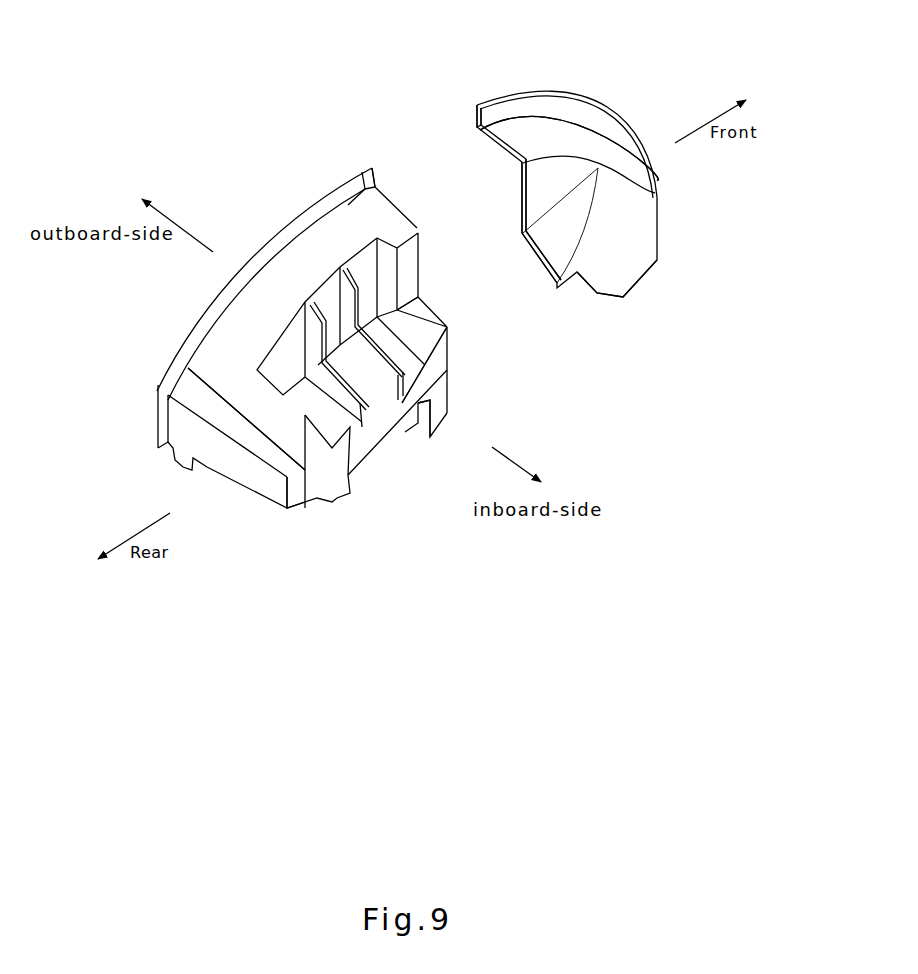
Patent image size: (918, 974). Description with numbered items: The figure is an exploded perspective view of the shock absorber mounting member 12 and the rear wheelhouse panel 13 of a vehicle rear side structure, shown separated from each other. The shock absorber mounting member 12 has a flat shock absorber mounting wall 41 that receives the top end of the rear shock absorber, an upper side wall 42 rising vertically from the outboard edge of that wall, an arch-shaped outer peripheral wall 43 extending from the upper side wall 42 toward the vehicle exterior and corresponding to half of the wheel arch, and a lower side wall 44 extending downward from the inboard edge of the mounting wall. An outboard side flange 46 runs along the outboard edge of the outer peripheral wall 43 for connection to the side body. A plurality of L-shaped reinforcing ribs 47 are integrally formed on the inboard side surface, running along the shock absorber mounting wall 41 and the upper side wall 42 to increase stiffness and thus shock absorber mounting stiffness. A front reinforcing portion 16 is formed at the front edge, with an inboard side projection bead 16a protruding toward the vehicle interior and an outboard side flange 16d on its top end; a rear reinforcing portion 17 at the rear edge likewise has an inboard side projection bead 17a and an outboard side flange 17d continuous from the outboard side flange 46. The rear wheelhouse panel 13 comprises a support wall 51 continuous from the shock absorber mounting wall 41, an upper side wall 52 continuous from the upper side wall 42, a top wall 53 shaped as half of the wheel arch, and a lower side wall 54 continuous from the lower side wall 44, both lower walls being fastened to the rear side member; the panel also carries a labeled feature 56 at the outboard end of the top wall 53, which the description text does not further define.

The shock absorber mounting member 12 is at (251, 228).
The rear wheelhouse panel 13 is at (619, 103).
The front reinforcing portion 16 is at (414, 211).
The inboard side projection bead 16a is at (410, 287).
The outboard side flange 16d is at (372, 187).
The rear reinforcing portion 17 is at (250, 440).
The inboard side projection bead 17a is at (283, 435).
The outboard side flange 17d is at (200, 332).
The shock absorber mounting wall 41 is at (417, 372).
The upper side wall 42 is at (366, 273).
The outer peripheral wall 43 is at (348, 227).
The lower side wall 44 is at (393, 425).
The outboard side flange 46 is at (312, 210).
The reinforcing ribs 47 is at (390, 382).
The support wall 51 is at (548, 243).
The upper side wall 52 is at (532, 195).
The top wall 53 is at (530, 140).
The lower side wall 54 is at (605, 272).
The pad upper corner 56 is at (493, 113).